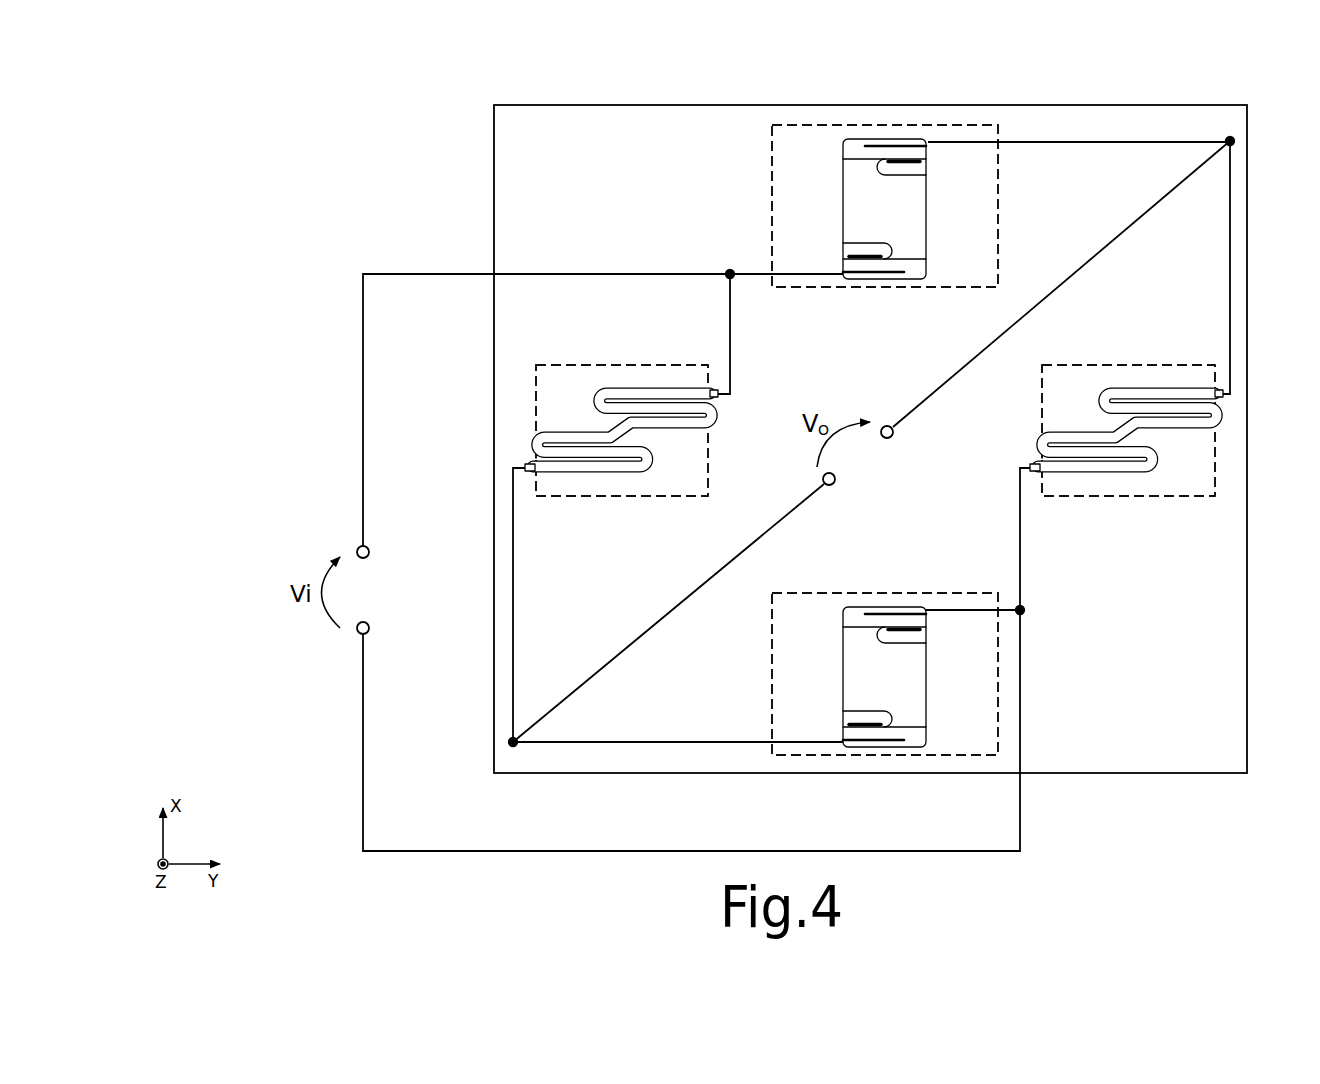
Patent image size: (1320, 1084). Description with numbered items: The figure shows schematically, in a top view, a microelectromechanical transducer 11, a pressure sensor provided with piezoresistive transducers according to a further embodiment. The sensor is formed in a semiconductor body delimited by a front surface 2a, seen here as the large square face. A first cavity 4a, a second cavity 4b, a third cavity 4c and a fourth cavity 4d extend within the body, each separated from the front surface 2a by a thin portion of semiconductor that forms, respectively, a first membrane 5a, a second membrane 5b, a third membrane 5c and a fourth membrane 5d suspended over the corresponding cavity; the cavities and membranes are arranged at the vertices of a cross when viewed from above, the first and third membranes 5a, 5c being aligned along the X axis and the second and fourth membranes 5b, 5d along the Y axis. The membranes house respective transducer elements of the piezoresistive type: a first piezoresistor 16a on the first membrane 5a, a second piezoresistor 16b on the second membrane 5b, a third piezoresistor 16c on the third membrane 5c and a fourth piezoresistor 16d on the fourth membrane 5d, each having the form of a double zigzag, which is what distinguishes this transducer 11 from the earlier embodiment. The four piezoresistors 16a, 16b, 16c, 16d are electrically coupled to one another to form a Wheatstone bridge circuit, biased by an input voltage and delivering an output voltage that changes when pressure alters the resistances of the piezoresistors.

The microelectromechanical transducer 11 is at (325, 214).
The front surface 2a is at (520, 140).
The first cavity 4a is at (782, 172).
The second cavity 4b is at (1157, 370).
The third cavity 4c is at (784, 632).
The fourth cavity 4d is at (572, 380).
The first membrane 5a is at (793, 207).
The second membrane 5b is at (1152, 484).
The third membrane 5c is at (822, 657).
The fourth membrane 5d is at (610, 486).
The first piezoresistor 16a is at (923, 192).
The second piezoresistor 16b is at (1185, 392).
The third piezoresistor 16c is at (928, 705).
The fourth piezoresistor 16d is at (548, 445).